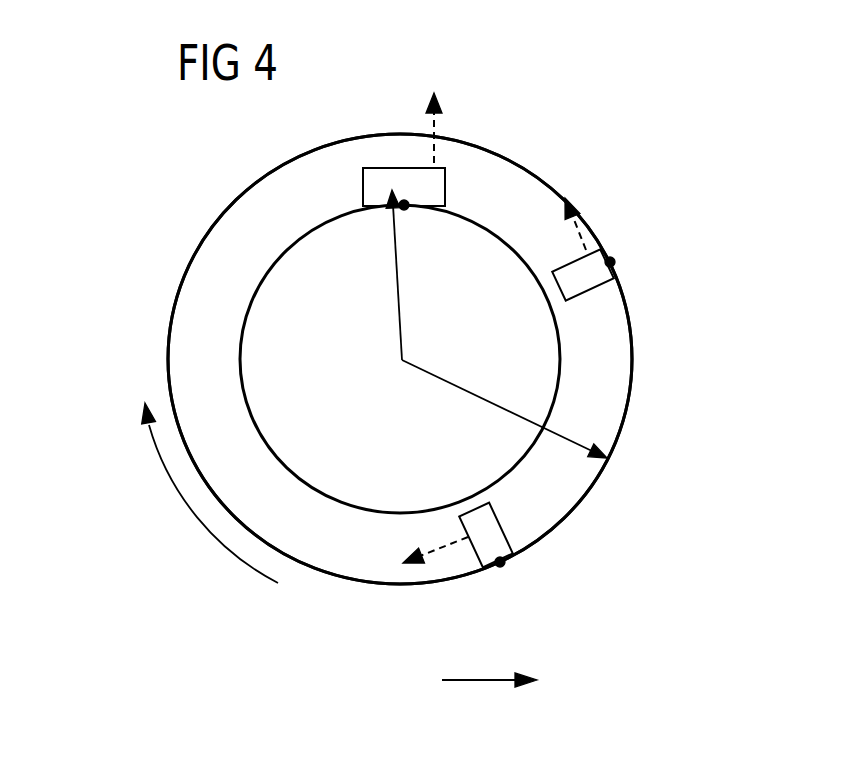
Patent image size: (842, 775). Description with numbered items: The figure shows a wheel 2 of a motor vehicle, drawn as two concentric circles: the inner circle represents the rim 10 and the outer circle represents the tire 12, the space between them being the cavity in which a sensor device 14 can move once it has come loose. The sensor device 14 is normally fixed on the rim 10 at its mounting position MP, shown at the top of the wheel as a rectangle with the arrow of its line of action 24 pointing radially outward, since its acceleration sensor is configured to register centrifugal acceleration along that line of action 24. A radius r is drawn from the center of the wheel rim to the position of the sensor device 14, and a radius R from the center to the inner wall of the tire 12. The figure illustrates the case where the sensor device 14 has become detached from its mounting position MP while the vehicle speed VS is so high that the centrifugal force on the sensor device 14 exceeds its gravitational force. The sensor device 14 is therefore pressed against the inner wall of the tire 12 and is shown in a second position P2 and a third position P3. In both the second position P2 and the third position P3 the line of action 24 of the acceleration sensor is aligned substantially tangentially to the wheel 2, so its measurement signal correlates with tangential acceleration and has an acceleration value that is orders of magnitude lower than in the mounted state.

The wheel 2 is at (594, 140).
The rim 10 is at (380, 500).
The tire 12 is at (628, 405).
The sensor device 14 is at (381, 181).
The line of action 24 is at (434, 152).
The mounting position MP is at (404, 208).
The second position P2 is at (613, 262).
The third position P3 is at (501, 565).
The radius to the sensor device position r is at (391, 275).
The radius to the inner wall of the tire R is at (504, 409).
The vehicle speed VS is at (489, 665).